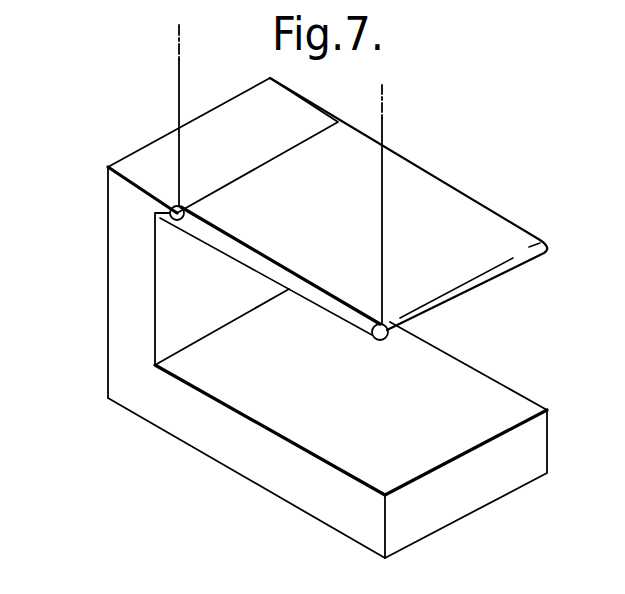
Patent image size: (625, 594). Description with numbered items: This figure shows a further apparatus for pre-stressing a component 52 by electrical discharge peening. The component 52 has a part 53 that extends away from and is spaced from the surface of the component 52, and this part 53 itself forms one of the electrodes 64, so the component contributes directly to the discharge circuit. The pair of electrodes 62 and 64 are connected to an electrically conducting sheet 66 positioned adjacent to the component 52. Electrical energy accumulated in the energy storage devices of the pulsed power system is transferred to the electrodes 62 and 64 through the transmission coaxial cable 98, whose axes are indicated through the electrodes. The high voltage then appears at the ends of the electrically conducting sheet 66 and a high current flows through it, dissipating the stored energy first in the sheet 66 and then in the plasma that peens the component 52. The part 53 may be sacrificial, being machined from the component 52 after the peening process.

The component 52 is at (356, 523).
The part 53 is at (130, 280).
The electrode 62 is at (482, 281).
The electrode 64 is at (170, 212).
The electrically conducting sheet 66 is at (355, 318).
The transmission coaxial cable 98 is at (178, 79).